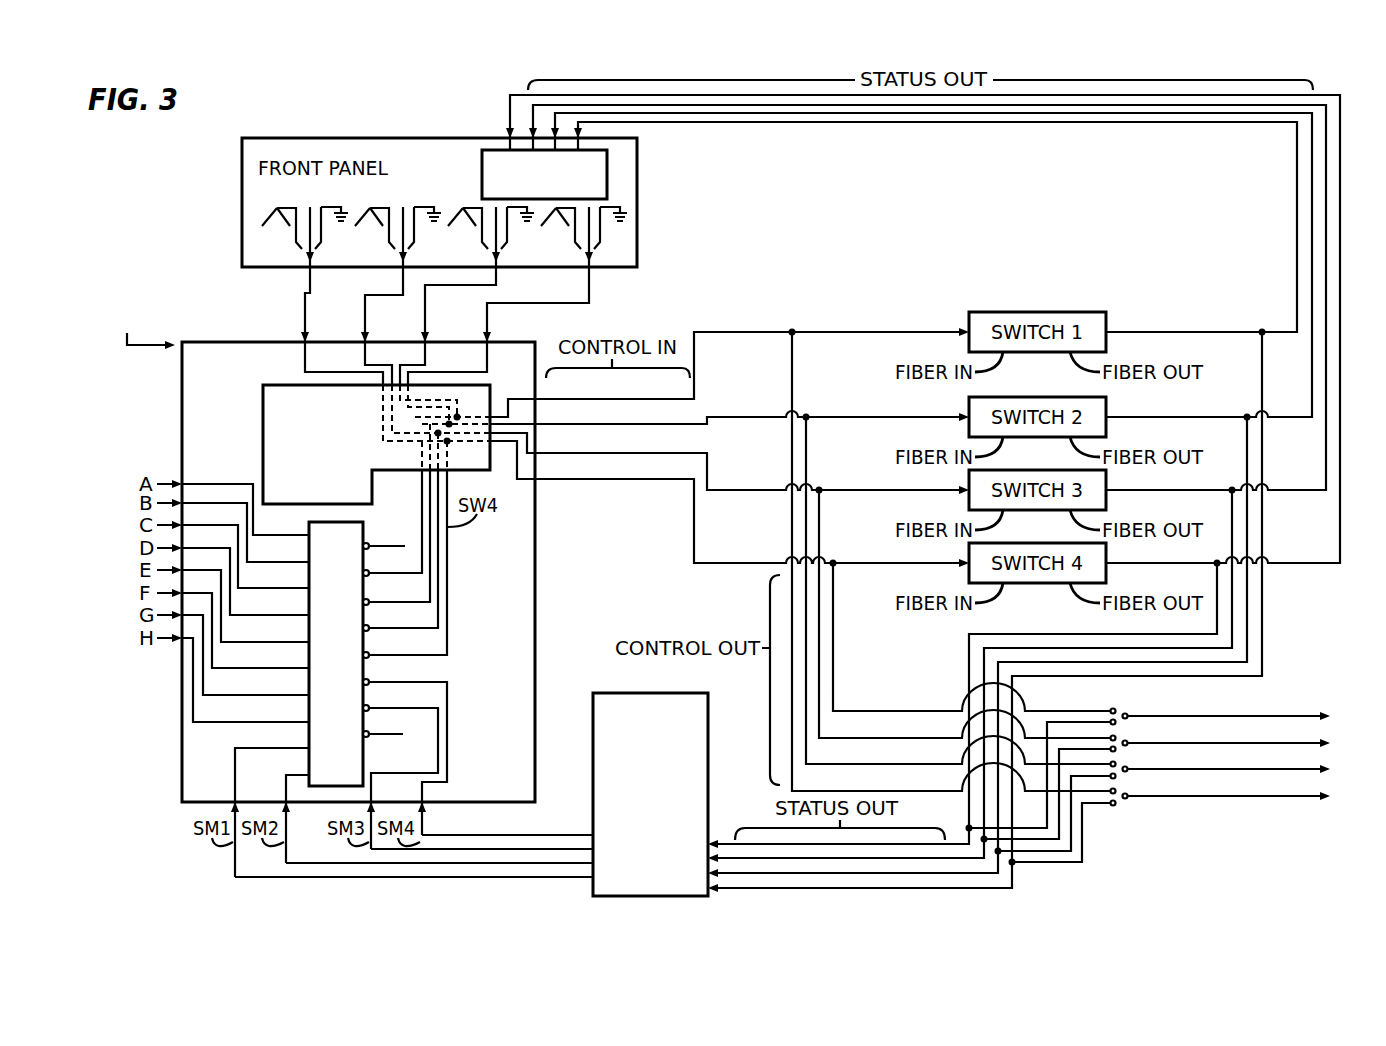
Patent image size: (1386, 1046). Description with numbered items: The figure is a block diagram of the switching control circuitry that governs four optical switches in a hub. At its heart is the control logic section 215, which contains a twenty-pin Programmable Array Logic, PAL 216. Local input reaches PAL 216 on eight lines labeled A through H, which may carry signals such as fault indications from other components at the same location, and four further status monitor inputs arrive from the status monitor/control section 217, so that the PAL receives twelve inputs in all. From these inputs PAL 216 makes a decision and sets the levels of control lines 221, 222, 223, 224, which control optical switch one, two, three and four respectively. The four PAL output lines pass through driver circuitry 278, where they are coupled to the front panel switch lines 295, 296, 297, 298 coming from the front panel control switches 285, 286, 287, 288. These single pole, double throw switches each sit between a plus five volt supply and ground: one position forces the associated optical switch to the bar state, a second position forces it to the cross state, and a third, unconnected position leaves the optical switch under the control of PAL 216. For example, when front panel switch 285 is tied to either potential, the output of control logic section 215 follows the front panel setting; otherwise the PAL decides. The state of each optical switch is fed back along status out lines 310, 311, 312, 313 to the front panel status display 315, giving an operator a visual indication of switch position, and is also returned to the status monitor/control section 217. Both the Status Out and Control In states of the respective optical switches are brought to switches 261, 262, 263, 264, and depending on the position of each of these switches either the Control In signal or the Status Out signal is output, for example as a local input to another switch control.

The control logic section 215 is at (170, 806).
The Programmable Array Logic (PAL) 216 is at (365, 521).
The status monitor/control section 217 is at (708, 762).
The control line 221 is at (550, 399).
The control line 222 is at (550, 424).
The control line 223 is at (550, 453).
The control line 224 is at (550, 479).
The switch 261 is at (1127, 793).
The switch 262 is at (1127, 766).
The switch 263 is at (1127, 740).
The switch 264 is at (1127, 713).
The driver circuitry 278 is at (263, 431).
The front panel control switch 285 is at (316, 206).
The front panel control switch 286 is at (410, 206).
The front panel control switch 287 is at (503, 206).
The front panel control switch 288 is at (622, 208).
The front panel switch line 295 is at (303, 324).
The front panel switch line 296 is at (362, 324).
The front panel switch line 297 is at (422, 324).
The front panel switch line 298 is at (484, 324).
The status out line 310 is at (915, 123).
The status out line 311 is at (973, 114).
The status out line 312 is at (835, 106).
The status out line 313 is at (783, 97).
The front panel status display 315 is at (607, 176).